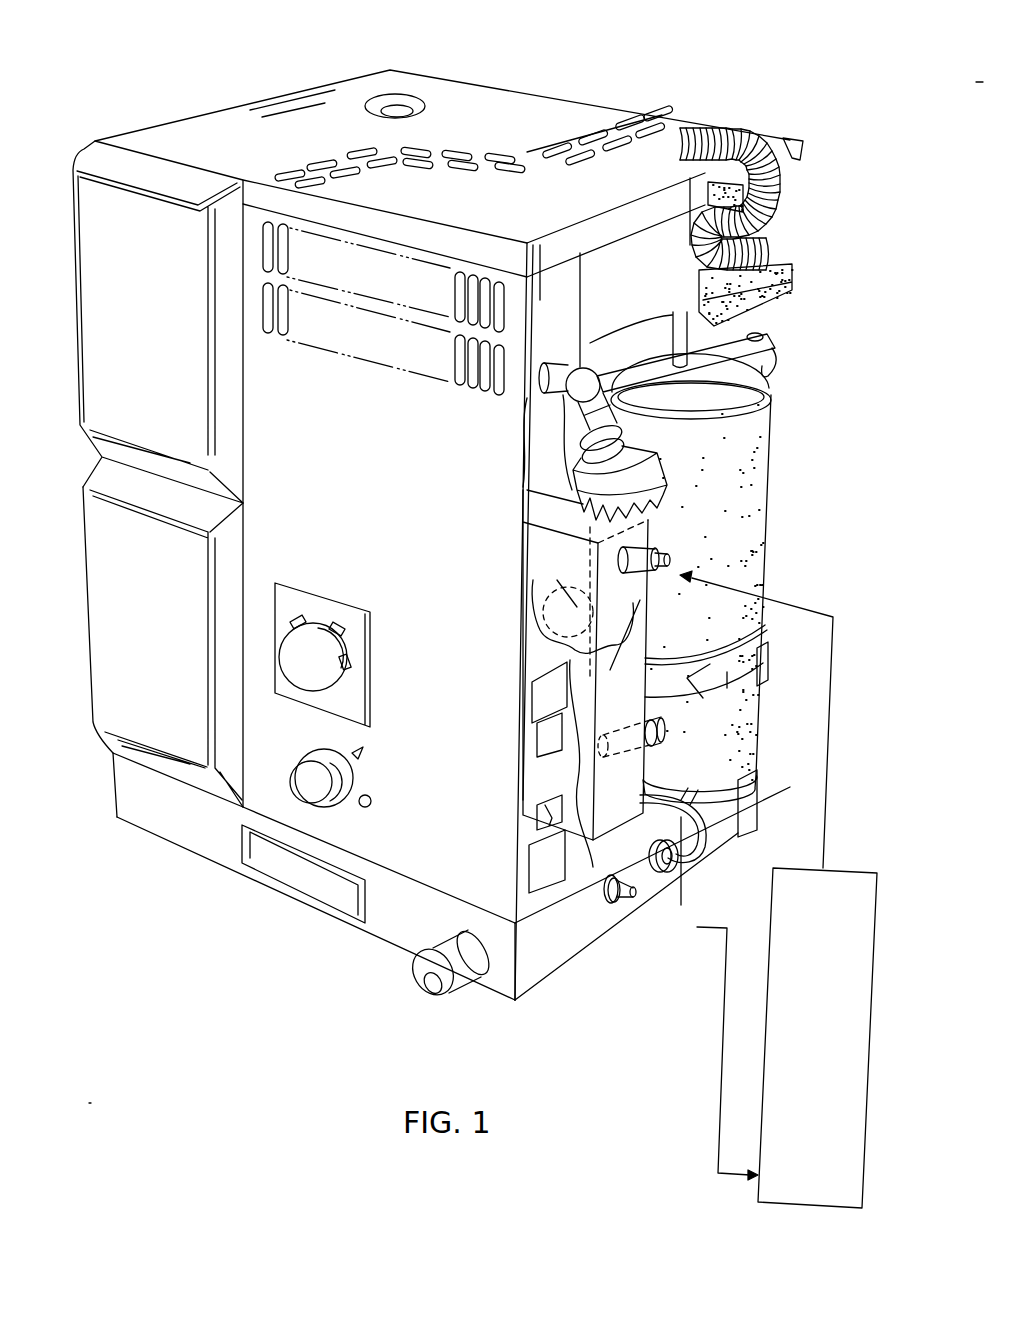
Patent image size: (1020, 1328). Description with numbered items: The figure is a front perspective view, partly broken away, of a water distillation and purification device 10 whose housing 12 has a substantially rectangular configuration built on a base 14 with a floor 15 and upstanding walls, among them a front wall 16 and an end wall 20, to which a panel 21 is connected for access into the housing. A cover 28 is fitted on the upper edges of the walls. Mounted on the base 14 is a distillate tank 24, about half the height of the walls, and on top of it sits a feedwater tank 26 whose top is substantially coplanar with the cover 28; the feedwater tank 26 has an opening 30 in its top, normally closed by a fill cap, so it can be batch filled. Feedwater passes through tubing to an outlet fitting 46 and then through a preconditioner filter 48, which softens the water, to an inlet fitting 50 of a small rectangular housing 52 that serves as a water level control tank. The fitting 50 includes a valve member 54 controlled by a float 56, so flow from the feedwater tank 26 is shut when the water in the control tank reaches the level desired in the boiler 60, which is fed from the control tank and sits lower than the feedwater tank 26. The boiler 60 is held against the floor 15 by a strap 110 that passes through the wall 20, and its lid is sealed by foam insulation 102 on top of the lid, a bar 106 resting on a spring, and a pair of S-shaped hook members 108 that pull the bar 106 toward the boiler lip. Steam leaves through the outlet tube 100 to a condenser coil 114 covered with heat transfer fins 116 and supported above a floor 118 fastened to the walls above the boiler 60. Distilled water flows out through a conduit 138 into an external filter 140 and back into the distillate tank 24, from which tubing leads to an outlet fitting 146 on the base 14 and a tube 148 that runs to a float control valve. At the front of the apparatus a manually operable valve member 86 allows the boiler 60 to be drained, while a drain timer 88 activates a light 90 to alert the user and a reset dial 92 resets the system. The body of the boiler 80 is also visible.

The water distillation and purification device 10 is at (558, 76).
The housing 12 is at (554, 980).
The base 14 is at (592, 933).
The floor 15 is at (668, 885).
The upstanding wall 16 is at (415, 862).
The end wall 20 is at (562, 277).
The panel 21 is at (782, 244).
The distillate tank 24 is at (100, 652).
The feedwater tank 26 is at (98, 290).
The cover 28 is at (640, 160).
The opening 30 is at (398, 104).
The outlet fitting 46 is at (636, 896).
The preconditioner filter 48 is at (866, 890).
The inlet fitting 50 is at (668, 563).
The water level control tank housing 52 is at (558, 556).
The valve member 54 is at (650, 533).
The float 56 is at (525, 616).
The boiler 60 is at (781, 468).
The container body 80 is at (740, 522).
The manually operable valve member 86 is at (449, 992).
The drain timer 88 is at (313, 640).
The light 90 is at (372, 800).
The reset dial 92 is at (311, 752).
The outlet tube 100 is at (673, 316).
The foam insulation 102 is at (772, 396).
The bar 106 is at (760, 338).
The S-shaped hook members 108 is at (770, 366).
The strap 110 is at (768, 655).
The condenser coil 114 is at (774, 136).
The heat transfer fins 116 is at (790, 180).
The floor 118 is at (790, 292).
The conduit 138 is at (530, 420).
The external filter 140 is at (670, 463).
The outlet fitting 146 is at (690, 832).
The tube 148 is at (735, 842).